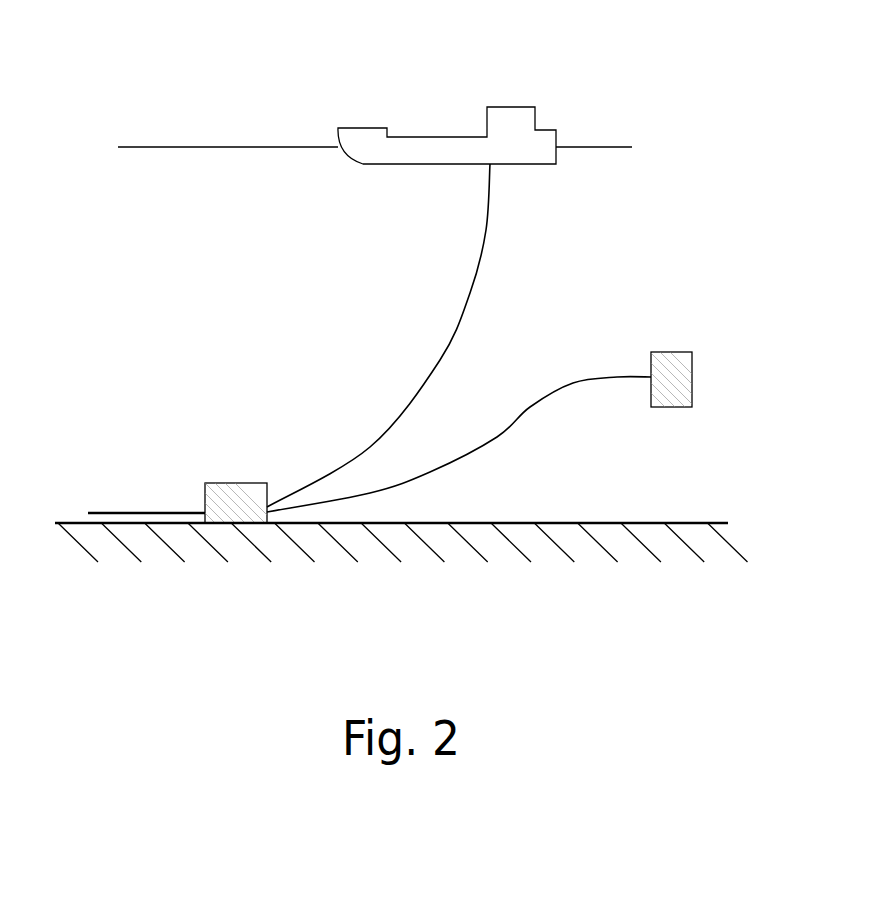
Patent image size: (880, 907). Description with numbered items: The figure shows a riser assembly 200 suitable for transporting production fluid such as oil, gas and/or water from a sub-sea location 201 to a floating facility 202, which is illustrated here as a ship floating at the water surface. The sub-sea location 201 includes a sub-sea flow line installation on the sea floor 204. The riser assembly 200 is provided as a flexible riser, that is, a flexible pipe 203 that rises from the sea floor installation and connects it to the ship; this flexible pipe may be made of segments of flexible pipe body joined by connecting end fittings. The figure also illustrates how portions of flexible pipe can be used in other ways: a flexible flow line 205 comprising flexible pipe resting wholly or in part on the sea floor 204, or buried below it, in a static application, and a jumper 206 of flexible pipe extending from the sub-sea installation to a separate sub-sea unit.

The riser assembly 200 is at (667, 245).
The sub-sea location 201 is at (233, 483).
The floating facility 202 is at (362, 128).
The flexible pipe 203 is at (470, 293).
The sea floor 204 is at (690, 522).
The flexible flow line 205 is at (137, 513).
The jumper 206 is at (620, 375).